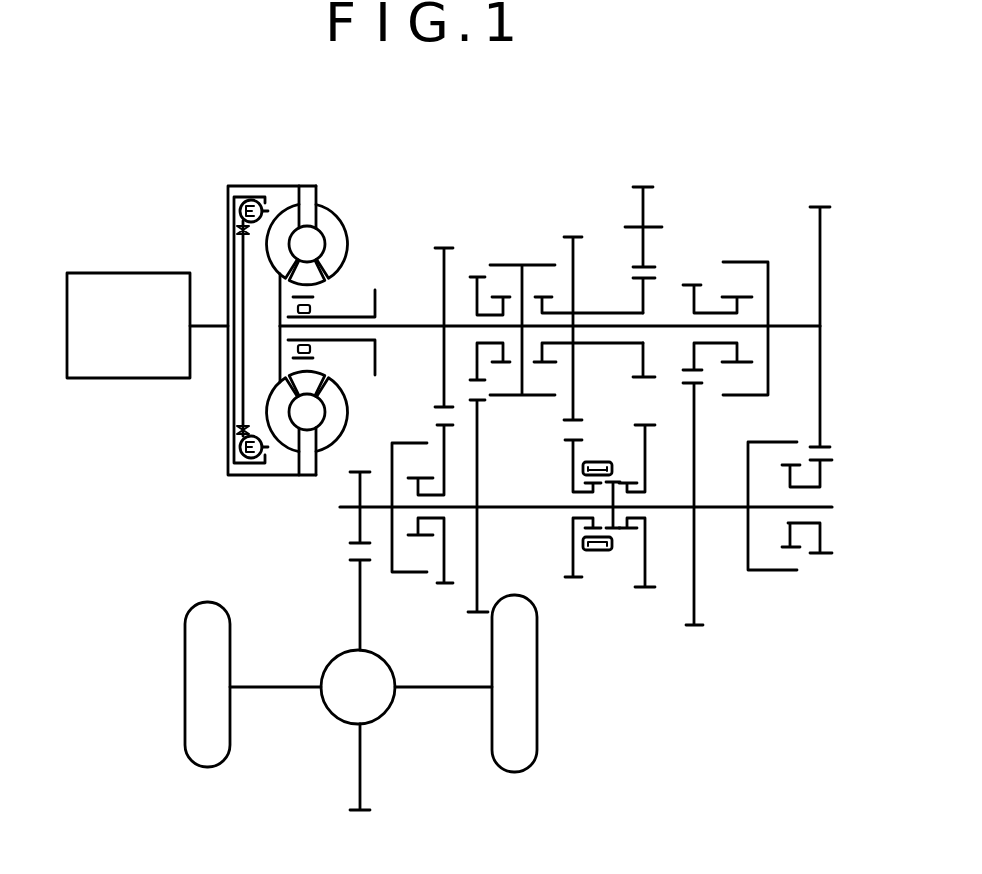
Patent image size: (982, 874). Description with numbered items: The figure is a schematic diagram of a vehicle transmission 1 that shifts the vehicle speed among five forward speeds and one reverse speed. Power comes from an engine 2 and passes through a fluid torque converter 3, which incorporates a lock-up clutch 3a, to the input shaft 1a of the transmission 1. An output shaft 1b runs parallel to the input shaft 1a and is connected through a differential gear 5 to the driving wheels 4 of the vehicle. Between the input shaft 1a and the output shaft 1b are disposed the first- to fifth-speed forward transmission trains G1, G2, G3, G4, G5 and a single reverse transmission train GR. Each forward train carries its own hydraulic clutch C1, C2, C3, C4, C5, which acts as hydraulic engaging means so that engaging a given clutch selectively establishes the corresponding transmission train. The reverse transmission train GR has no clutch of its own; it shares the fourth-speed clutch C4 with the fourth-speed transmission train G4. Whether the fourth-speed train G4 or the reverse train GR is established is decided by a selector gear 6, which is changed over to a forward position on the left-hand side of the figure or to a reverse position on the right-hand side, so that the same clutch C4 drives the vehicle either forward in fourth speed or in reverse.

The transmission 1 is at (571, 182).
The input shaft 1a is at (396, 325).
The output shaft 1b is at (519, 509).
The engine 2 is at (118, 290).
The fluid torque converter 3 is at (338, 210).
The lock-up clutch 3a is at (242, 270).
The driving wheels 4 is at (215, 757).
The differential gear 5 is at (378, 710).
The selector gear 6 is at (597, 551).
The first-speed forward transmission train G1 is at (696, 281).
The second-speed forward transmission train G2 is at (478, 273).
The third-speed forward transmission train G3 is at (444, 244).
The fourth-speed forward transmission train G4 is at (582, 232).
The fifth-speed forward transmission train G5 is at (820, 203).
The reverse transmission train GR is at (652, 184).
The first-speed hydraulic clutch C1 is at (748, 262).
The second-speed hydraulic clutch C2 is at (510, 398).
The third-speed hydraulic clutch C3 is at (408, 440).
The fourth-speed hydraulic clutch C4 is at (535, 263).
The fifth-speed hydraulic clutch C5 is at (762, 572).